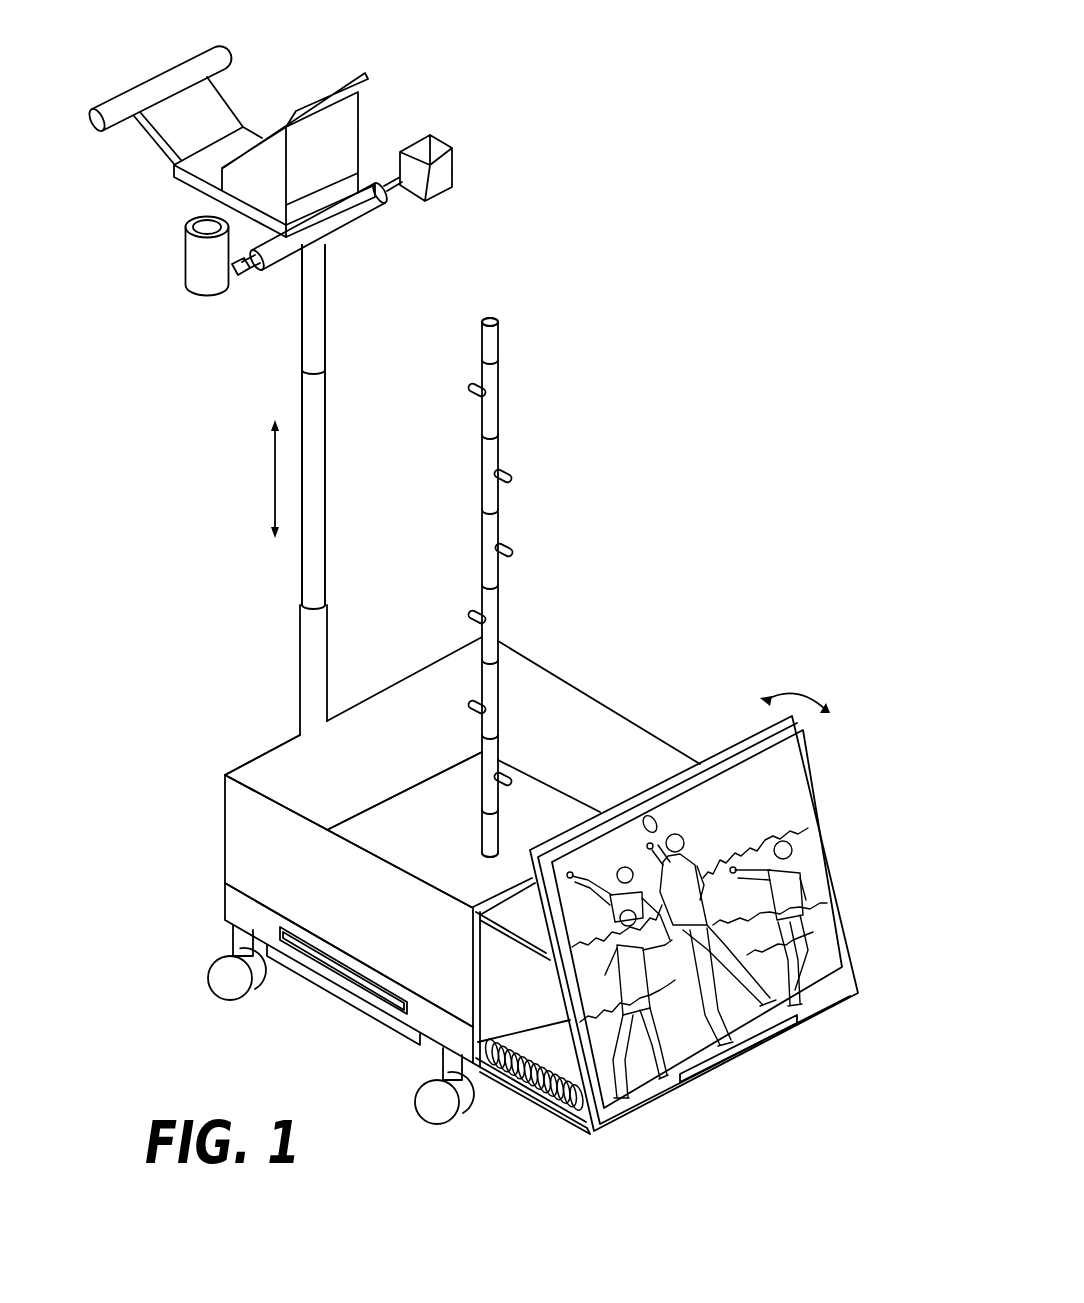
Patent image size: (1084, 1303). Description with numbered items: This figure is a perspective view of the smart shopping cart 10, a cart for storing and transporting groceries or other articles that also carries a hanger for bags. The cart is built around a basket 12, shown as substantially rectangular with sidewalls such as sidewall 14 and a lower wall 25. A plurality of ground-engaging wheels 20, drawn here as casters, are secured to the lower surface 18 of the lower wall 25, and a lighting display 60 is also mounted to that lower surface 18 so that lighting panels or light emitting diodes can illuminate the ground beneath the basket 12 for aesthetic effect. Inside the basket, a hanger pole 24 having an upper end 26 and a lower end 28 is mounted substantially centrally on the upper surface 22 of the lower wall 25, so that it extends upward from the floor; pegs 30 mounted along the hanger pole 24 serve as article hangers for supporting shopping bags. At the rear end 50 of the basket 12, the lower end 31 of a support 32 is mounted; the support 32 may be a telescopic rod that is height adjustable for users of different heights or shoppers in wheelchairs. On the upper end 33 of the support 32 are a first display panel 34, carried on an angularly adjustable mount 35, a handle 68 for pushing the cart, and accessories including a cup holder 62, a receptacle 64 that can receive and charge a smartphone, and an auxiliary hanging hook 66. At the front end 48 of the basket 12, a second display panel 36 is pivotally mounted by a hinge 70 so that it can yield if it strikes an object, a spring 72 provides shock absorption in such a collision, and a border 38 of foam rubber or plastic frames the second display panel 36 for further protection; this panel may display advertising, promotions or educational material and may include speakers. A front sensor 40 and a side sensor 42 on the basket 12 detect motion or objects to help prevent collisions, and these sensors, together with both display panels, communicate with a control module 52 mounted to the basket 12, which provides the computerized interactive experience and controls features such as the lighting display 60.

The smart shopping cart 10 is at (716, 535).
The basket 12 is at (552, 712).
The sidewall 14 is at (238, 838).
The lower surface 18 is at (424, 1057).
The ground-engaging wheels 20 is at (230, 985).
The upper surface 22 is at (436, 816).
The hanger pole 24 is at (500, 405).
The lower wall 25 is at (372, 826).
The upper end 26 is at (500, 320).
The lower end 28 is at (484, 855).
The pegs 30 is at (468, 394).
The lower end 31 is at (270, 727).
The support 32 is at (327, 323).
The upper end 33 is at (302, 266).
The first display panel 34 is at (337, 82).
The mount 35 is at (233, 190).
The second display panel 36 is at (790, 784).
The border 38 is at (841, 887).
The front sensor 40 is at (736, 1058).
The side sensor 42 is at (335, 967).
The front end 48 is at (608, 774).
The rear end 50 is at (360, 664).
The control module 52 is at (255, 920).
The lighting display 60 is at (383, 1024).
The cup holder 62 is at (192, 256).
The receptacle 64 is at (455, 160).
The auxiliary hanging hook 66 is at (247, 278).
The handle 68 is at (152, 80).
The hinge 70 is at (548, 957).
The spring 72 is at (537, 1104).